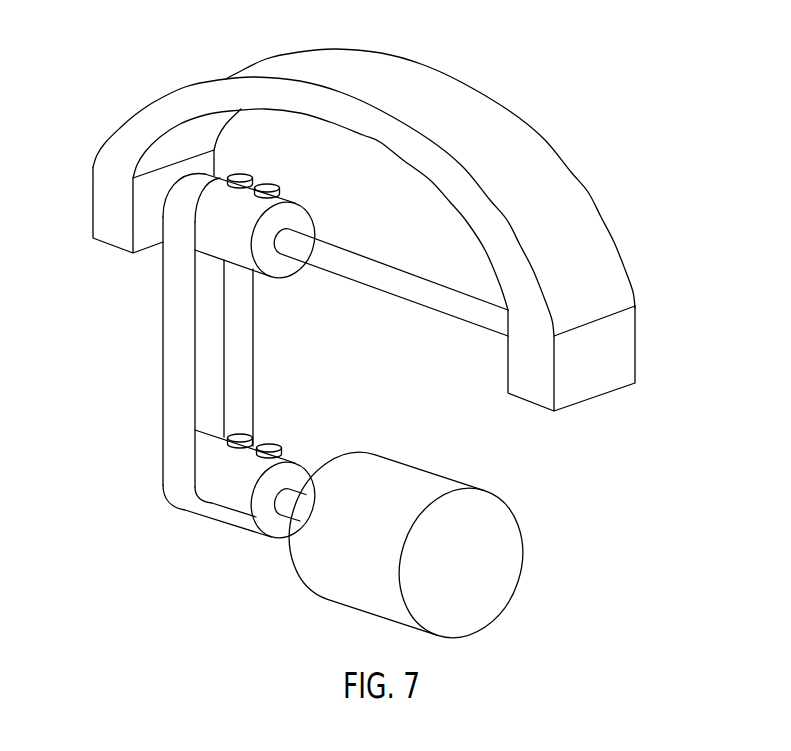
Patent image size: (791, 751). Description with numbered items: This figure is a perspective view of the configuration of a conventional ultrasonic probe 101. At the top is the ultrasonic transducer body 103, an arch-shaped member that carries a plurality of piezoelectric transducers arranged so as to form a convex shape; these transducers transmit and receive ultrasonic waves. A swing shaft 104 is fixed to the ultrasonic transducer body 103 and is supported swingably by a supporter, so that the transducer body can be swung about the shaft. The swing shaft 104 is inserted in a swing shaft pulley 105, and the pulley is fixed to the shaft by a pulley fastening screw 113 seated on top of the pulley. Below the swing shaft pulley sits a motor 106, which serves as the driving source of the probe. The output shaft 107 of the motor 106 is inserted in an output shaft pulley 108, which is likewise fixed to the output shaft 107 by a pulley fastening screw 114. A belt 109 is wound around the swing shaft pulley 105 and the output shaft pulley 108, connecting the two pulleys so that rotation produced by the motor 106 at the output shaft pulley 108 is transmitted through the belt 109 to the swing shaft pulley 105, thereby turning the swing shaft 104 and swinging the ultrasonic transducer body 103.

The ultrasonic probe 101 is at (575, 70).
The ultrasonic transducer body 103 is at (534, 148).
The swing shaft 104 is at (396, 275).
The swing shaft pulley 105 is at (218, 232).
The motor 106 is at (490, 565).
The output shaft 107 is at (288, 507).
The output shaft pulley 108 is at (228, 498).
The belt 109 is at (177, 343).
The pulley fastening screw 113 is at (270, 188).
The pulley fastening screw 114 is at (272, 445).